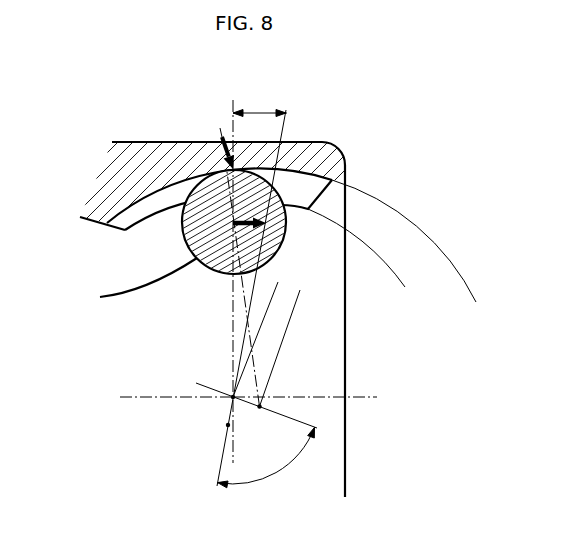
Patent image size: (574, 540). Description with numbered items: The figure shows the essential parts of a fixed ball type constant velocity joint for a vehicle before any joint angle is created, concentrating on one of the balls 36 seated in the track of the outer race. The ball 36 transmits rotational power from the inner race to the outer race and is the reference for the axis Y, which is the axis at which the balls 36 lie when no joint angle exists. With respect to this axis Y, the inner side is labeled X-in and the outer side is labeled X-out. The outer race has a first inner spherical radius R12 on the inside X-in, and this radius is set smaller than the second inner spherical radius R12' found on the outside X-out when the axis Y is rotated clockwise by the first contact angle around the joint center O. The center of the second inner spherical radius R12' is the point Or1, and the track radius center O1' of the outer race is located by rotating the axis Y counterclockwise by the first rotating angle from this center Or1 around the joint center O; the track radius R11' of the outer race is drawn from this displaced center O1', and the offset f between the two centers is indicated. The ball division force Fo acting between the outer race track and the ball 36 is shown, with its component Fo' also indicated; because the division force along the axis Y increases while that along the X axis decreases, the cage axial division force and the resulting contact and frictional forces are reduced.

The balls 36 is at (100, 297).
The first inner spherical radius R12 is at (178, 297).
The second inner spherical radius R12' is at (350, 293).
The track radius R11' is at (309, 291).
The offset between groove centers f is at (327, 308).
The ball division force Fo is at (247, 137).
The radial force component Fo' is at (249, 216).
The joint center O is at (250, 399).
The center of the second inner spherical radius Or1 is at (228, 425).
The track radius center O1' is at (265, 430).
The axis Y is at (233, 271).
The inside X-in is at (152, 398).
The outside X-out is at (334, 398).